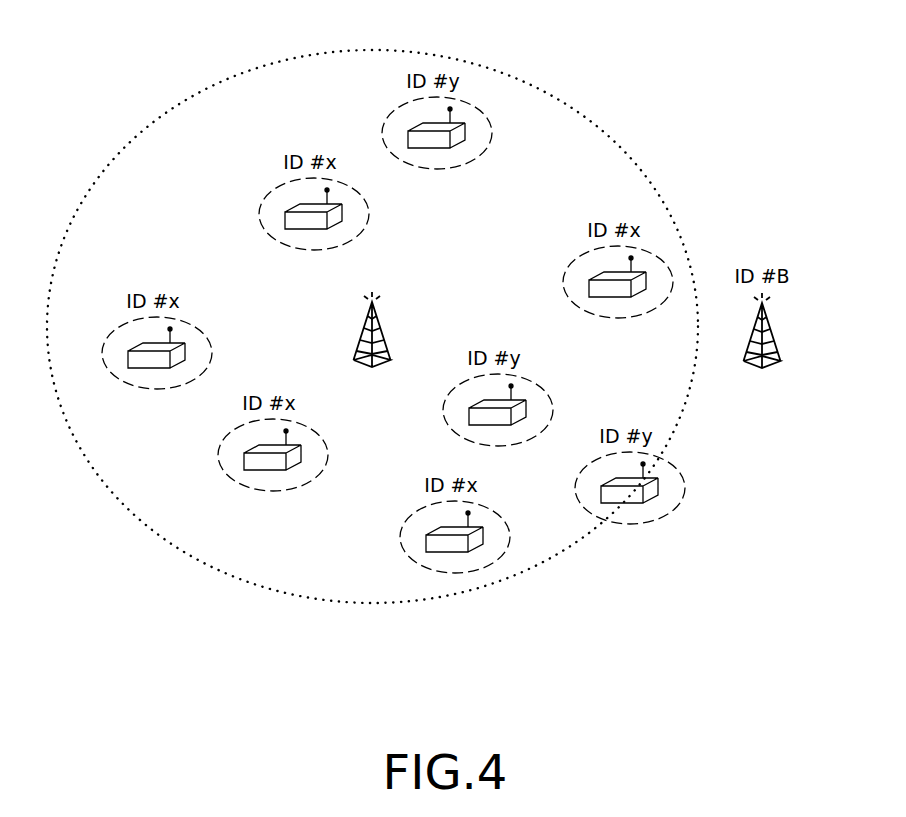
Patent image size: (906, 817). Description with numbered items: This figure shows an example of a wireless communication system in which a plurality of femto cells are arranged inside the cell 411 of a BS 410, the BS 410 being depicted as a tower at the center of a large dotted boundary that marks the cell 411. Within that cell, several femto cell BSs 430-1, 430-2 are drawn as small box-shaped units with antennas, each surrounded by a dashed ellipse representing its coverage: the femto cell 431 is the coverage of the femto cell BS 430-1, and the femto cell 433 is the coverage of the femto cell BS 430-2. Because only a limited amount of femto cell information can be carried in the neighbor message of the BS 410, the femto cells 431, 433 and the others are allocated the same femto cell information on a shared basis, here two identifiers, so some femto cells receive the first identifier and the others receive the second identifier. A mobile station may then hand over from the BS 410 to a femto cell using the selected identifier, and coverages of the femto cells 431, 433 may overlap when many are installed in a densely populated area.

The cell 411 is at (375, 50).
The BS 410 is at (384, 333).
The femto cell BS 430-1 is at (283, 215).
The femto cell 431 is at (370, 213).
The femto cell BS 430-2 is at (408, 136).
The femto cell 433 is at (492, 133).